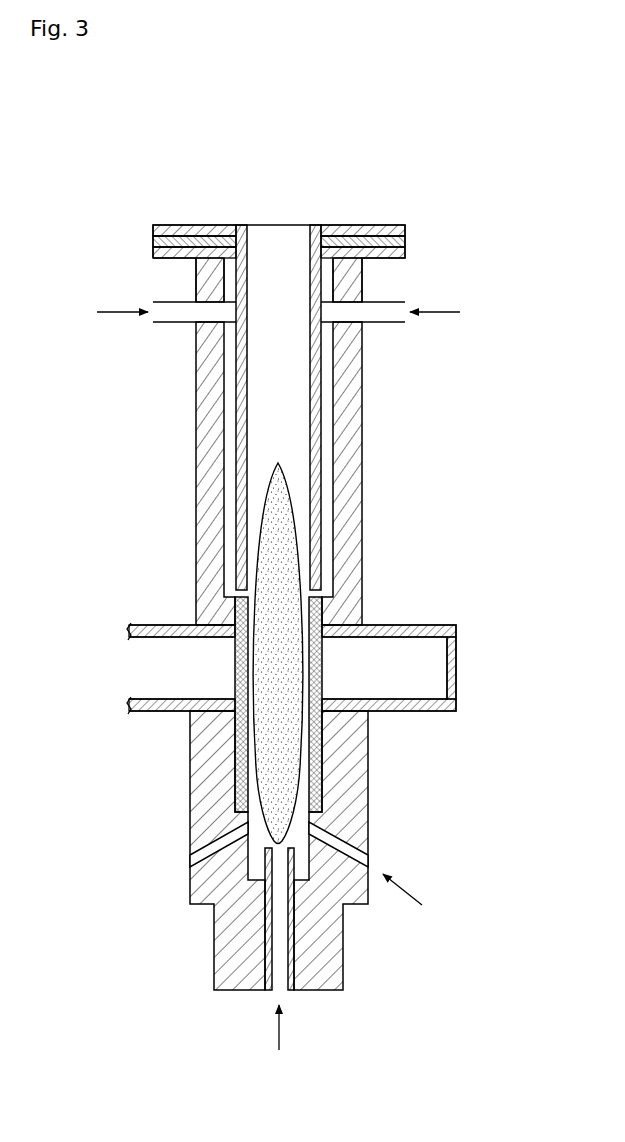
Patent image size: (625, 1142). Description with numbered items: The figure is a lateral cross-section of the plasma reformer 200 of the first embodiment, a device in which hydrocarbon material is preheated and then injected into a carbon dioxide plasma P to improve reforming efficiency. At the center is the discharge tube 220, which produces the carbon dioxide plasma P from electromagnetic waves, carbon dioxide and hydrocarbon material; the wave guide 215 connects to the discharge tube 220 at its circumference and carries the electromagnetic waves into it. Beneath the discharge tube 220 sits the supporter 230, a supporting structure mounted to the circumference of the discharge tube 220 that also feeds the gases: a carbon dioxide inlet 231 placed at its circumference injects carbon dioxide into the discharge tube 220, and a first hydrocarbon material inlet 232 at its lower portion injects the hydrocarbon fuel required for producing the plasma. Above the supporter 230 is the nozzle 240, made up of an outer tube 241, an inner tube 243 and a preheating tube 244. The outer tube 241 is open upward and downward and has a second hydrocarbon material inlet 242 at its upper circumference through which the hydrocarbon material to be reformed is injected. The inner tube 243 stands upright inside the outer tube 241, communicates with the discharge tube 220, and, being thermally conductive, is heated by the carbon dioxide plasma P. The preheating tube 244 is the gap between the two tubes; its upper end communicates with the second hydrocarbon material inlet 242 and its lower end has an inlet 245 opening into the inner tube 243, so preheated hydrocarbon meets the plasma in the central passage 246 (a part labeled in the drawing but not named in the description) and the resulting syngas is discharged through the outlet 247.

The plasma reformer 200 is at (212, 116).
The nozzle 240 is at (265, 399).
The outer tube 241 is at (350, 556).
The second hydrocarbon material inlet 242 is at (387, 323).
The inner tube 243 is at (322, 487).
The preheating tube 244 is at (325, 425).
The inlet 245 is at (330, 597).
The central bore 246 is at (273, 392).
The outlet 247 is at (313, 243).
The wave guide 215 is at (147, 713).
The discharge tube 220 is at (330, 800).
The carbon dioxide plasma P is at (297, 778).
The supporter 230 is at (278, 886).
The carbon dioxide inlet 231 is at (368, 862).
The first hydrocarbon material inlet 232 is at (283, 968).